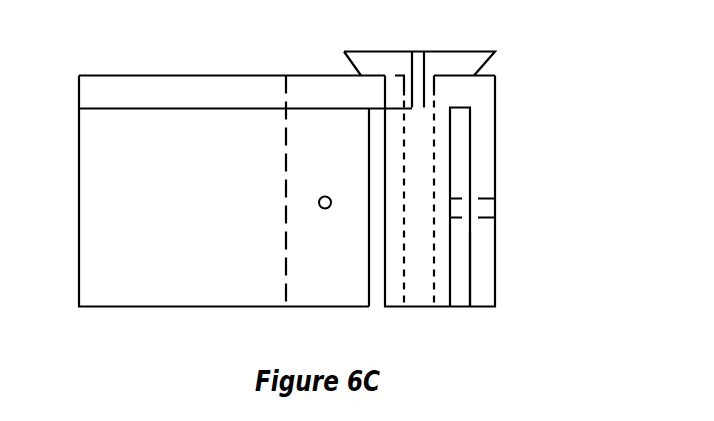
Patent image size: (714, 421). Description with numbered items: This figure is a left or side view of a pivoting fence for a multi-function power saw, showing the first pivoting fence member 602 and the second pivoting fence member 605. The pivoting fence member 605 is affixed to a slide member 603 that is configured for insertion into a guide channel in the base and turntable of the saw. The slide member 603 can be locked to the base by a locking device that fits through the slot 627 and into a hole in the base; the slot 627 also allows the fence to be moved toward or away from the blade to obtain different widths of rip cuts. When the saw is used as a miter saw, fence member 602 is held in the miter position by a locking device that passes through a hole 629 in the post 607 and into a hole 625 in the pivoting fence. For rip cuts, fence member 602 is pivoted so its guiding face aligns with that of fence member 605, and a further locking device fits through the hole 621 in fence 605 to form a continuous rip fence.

The first pivoting fence member 602 is at (493, 292).
The slide member 603 is at (390, 48).
The second pivoting fence member 605 is at (147, 305).
The post 607 is at (470, 252).
The hole 621 is at (320, 207).
The hole 625 is at (493, 197).
The slot 627 is at (415, 50).
The hole 629 is at (473, 217).